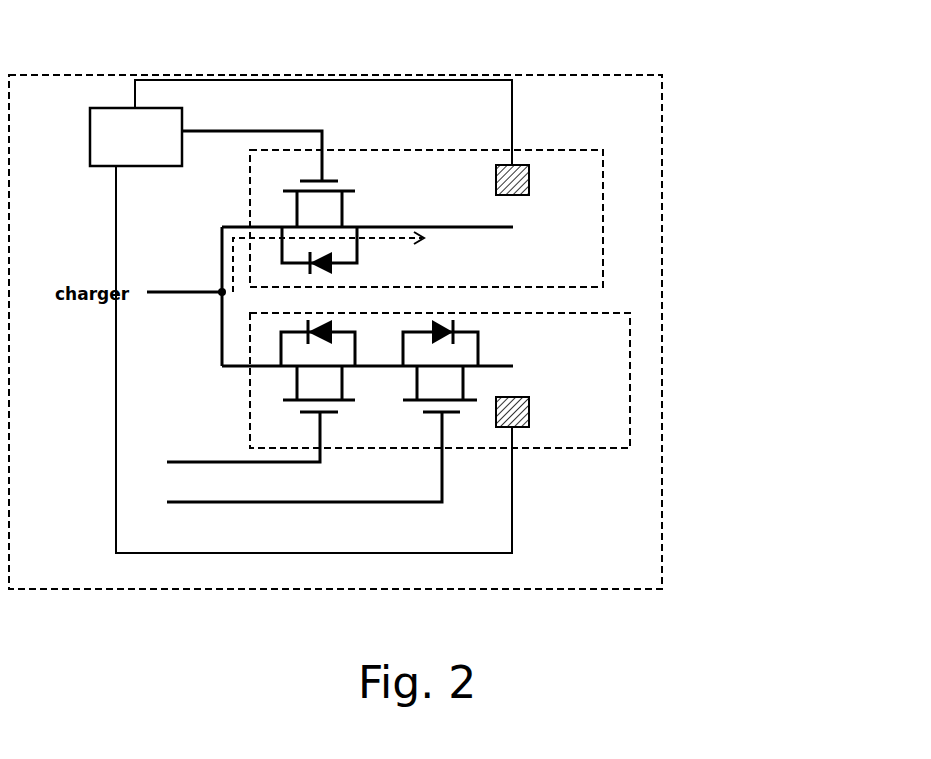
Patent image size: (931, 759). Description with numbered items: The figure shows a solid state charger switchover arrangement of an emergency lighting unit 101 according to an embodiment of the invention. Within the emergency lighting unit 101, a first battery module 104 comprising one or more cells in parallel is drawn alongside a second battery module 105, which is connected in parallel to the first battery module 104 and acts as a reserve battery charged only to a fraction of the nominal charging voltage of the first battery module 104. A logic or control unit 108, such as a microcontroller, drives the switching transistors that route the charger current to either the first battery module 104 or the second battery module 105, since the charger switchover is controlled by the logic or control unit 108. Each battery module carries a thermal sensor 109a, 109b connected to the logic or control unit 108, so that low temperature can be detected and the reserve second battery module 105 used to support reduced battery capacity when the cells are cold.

The emergency lighting unit 101 is at (617, 75).
The first battery module 104 is at (603, 193).
The second battery module 105 is at (630, 398).
The logic or control unit 108 is at (105, 108).
The thermal sensor 109a is at (529, 165).
The thermal sensor 109b is at (528, 427).